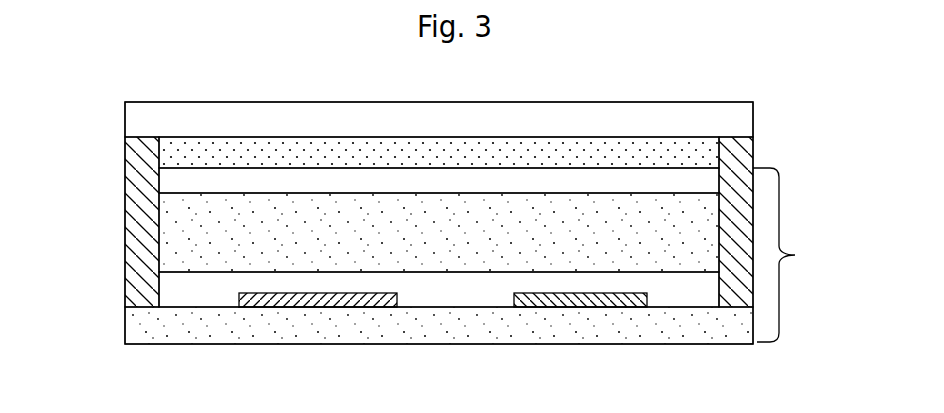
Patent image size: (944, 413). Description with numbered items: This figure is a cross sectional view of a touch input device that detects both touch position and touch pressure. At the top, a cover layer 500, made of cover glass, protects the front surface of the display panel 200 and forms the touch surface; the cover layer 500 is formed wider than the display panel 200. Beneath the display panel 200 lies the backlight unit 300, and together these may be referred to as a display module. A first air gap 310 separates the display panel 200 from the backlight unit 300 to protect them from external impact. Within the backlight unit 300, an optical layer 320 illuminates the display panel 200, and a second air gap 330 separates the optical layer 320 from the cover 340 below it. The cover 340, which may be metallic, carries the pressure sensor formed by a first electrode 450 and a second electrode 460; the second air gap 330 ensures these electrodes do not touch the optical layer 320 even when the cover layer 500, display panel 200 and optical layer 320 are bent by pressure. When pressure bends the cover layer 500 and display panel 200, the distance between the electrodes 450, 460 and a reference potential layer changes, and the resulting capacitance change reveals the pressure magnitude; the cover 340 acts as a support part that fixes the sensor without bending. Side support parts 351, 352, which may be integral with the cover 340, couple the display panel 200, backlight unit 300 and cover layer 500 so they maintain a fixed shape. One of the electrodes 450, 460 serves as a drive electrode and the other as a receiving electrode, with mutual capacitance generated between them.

The display panel 200 is at (172, 148).
The backlight unit 300 is at (793, 255).
The first air gap 310 is at (172, 180).
The optical layer 320 is at (172, 214).
The second air gap 330 is at (172, 292).
The cover 340 is at (143, 328).
The support part 351 is at (145, 246).
The support part 352 is at (738, 154).
The first electrode 450 is at (325, 307).
The second electrode 460 is at (571, 307).
The cover layer 500 is at (753, 113).